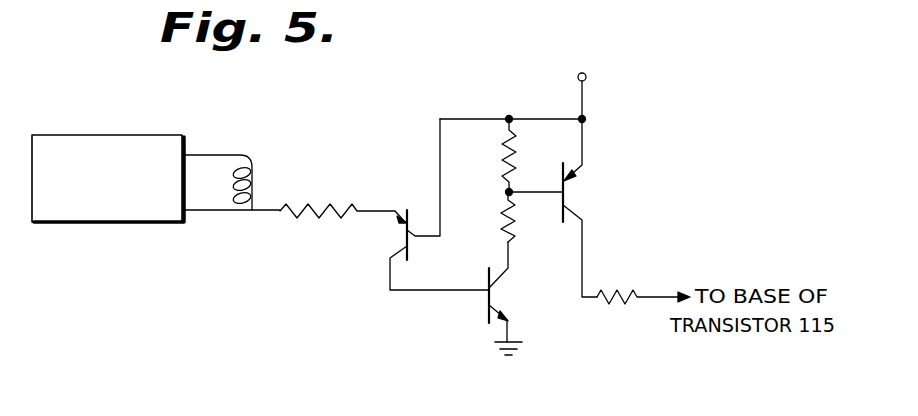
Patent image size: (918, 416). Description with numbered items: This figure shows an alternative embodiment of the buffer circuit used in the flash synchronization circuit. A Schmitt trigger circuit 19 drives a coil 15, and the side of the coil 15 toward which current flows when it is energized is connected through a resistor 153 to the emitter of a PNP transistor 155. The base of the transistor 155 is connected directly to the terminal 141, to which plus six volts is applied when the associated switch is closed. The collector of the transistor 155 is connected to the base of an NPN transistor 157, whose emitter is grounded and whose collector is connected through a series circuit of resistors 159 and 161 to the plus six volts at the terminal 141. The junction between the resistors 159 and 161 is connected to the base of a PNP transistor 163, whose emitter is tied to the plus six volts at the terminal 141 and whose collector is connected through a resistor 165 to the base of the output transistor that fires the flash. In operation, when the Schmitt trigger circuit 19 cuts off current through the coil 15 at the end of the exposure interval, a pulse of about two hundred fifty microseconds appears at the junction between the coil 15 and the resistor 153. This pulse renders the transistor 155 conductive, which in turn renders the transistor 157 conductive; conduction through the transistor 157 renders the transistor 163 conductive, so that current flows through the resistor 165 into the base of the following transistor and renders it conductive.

The Schmitt trigger circuit 19 is at (102, 135).
The coil 15 is at (252, 181).
The resistor 153 is at (338, 218).
The PNP transistor 155 is at (409, 252).
The NPN transistor 157 is at (487, 318).
The resistor 159 is at (500, 226).
The resistor 161 is at (500, 160).
The PNP transistor 163 is at (562, 213).
The resistor 165 is at (620, 290).
The terminal 141 is at (586, 78).